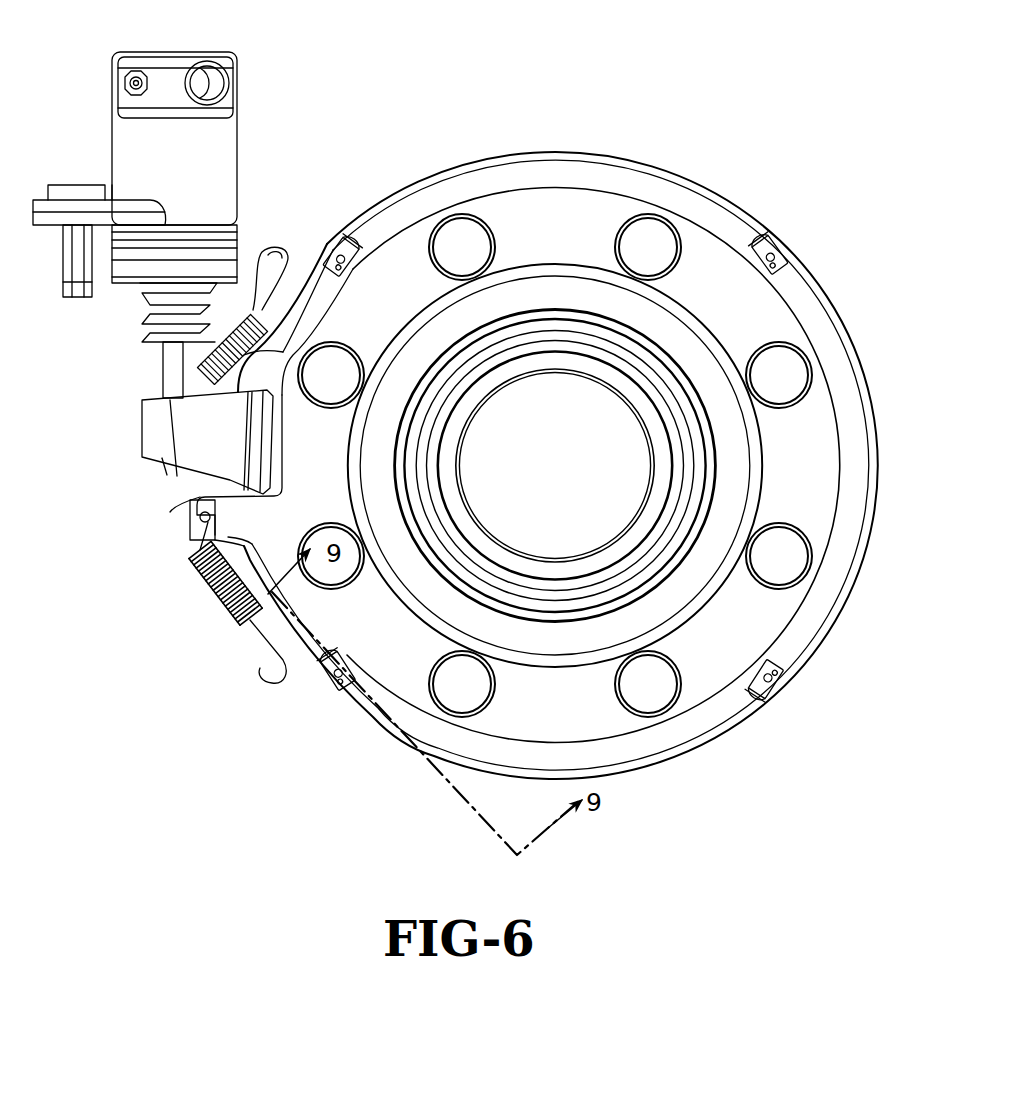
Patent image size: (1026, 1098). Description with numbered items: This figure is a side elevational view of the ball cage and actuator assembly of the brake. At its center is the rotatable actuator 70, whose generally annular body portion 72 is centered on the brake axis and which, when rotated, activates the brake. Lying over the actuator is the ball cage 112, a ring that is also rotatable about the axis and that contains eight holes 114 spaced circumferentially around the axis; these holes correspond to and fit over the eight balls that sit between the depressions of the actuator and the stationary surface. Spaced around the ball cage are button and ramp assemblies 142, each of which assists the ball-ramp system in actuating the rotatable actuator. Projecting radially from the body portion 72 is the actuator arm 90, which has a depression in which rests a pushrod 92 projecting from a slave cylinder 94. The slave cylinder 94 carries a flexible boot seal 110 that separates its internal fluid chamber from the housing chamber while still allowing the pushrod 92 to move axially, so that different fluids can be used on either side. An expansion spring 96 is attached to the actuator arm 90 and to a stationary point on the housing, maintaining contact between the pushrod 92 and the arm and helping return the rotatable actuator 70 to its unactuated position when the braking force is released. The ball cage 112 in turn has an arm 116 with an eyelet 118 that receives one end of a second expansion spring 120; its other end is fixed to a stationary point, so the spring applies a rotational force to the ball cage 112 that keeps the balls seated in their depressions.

The rotatable actuator 70 is at (562, 150).
The annular body portion 72 is at (866, 460).
The ball cage 112 is at (504, 187).
The holes 114 is at (446, 216).
The button and ramp assembly 142 is at (773, 242).
The slave cylinder 94 is at (82, 108).
The boot seal 110 is at (137, 302).
The pushrod 92 is at (165, 366).
The actuator arm 90 is at (150, 437).
The expansion spring 96 is at (262, 250).
The eyelet 118 is at (190, 508).
The arm 116 is at (198, 532).
The expansion spring 120 is at (258, 642).